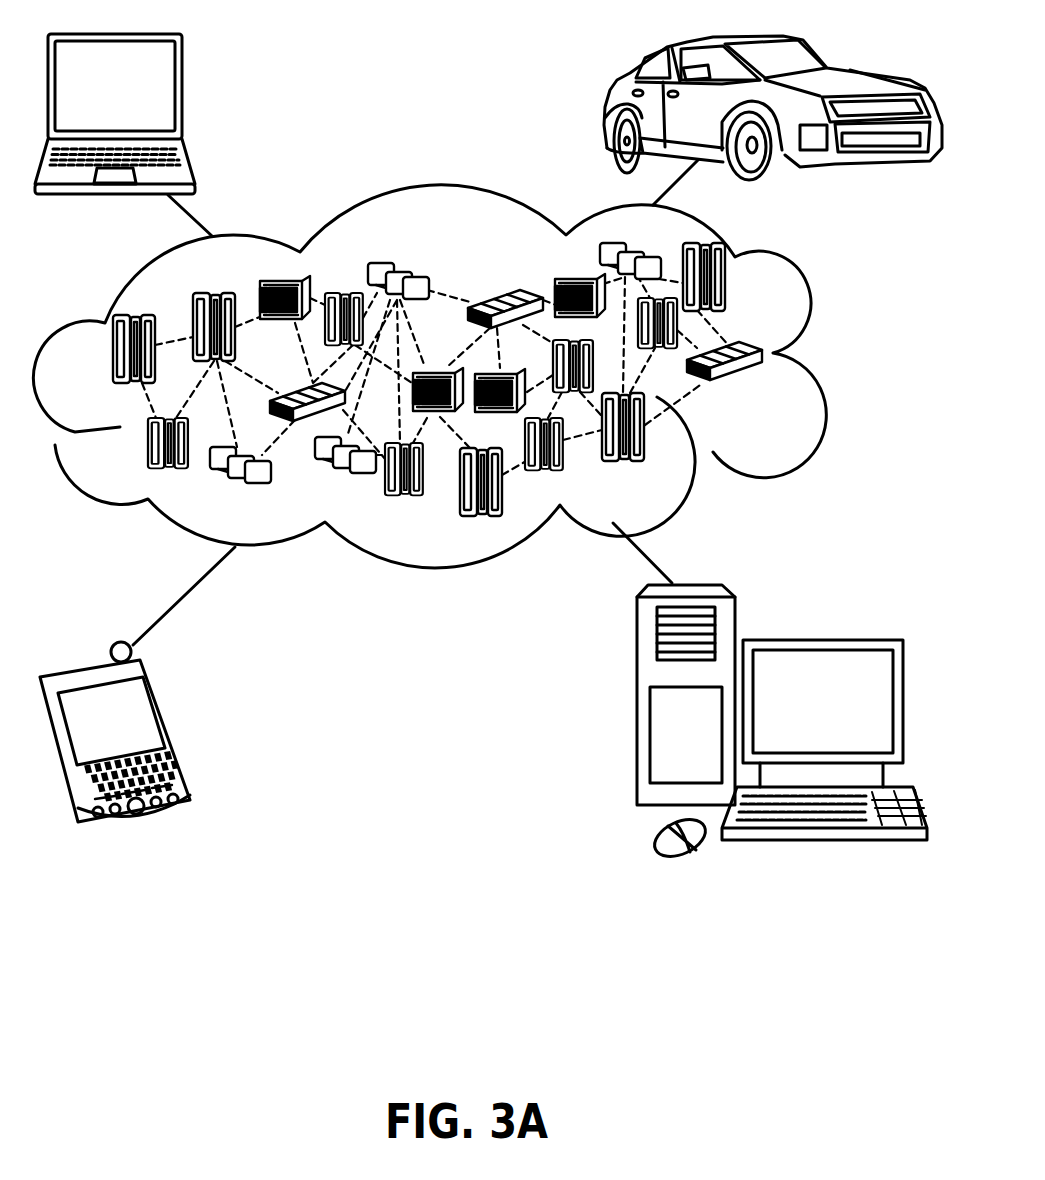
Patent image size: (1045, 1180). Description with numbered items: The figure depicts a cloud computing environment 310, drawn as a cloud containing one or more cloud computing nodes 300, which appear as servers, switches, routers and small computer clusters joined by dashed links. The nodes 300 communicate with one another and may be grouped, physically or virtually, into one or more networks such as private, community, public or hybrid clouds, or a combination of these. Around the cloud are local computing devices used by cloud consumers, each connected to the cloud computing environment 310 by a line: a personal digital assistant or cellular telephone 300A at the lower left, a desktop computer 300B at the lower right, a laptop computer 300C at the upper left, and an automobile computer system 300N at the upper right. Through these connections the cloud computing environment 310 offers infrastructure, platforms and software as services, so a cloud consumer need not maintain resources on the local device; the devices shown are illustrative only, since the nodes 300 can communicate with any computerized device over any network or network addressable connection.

The cloud computing nodes 300 is at (762, 386).
The cloud computing environment 310 is at (822, 357).
The personal digital assistant (PDA) or cellular telephone 300A is at (170, 730).
The desktop computer 300B is at (820, 640).
The laptop computer 300C is at (183, 92).
The automobile computer system 300N is at (608, 110).